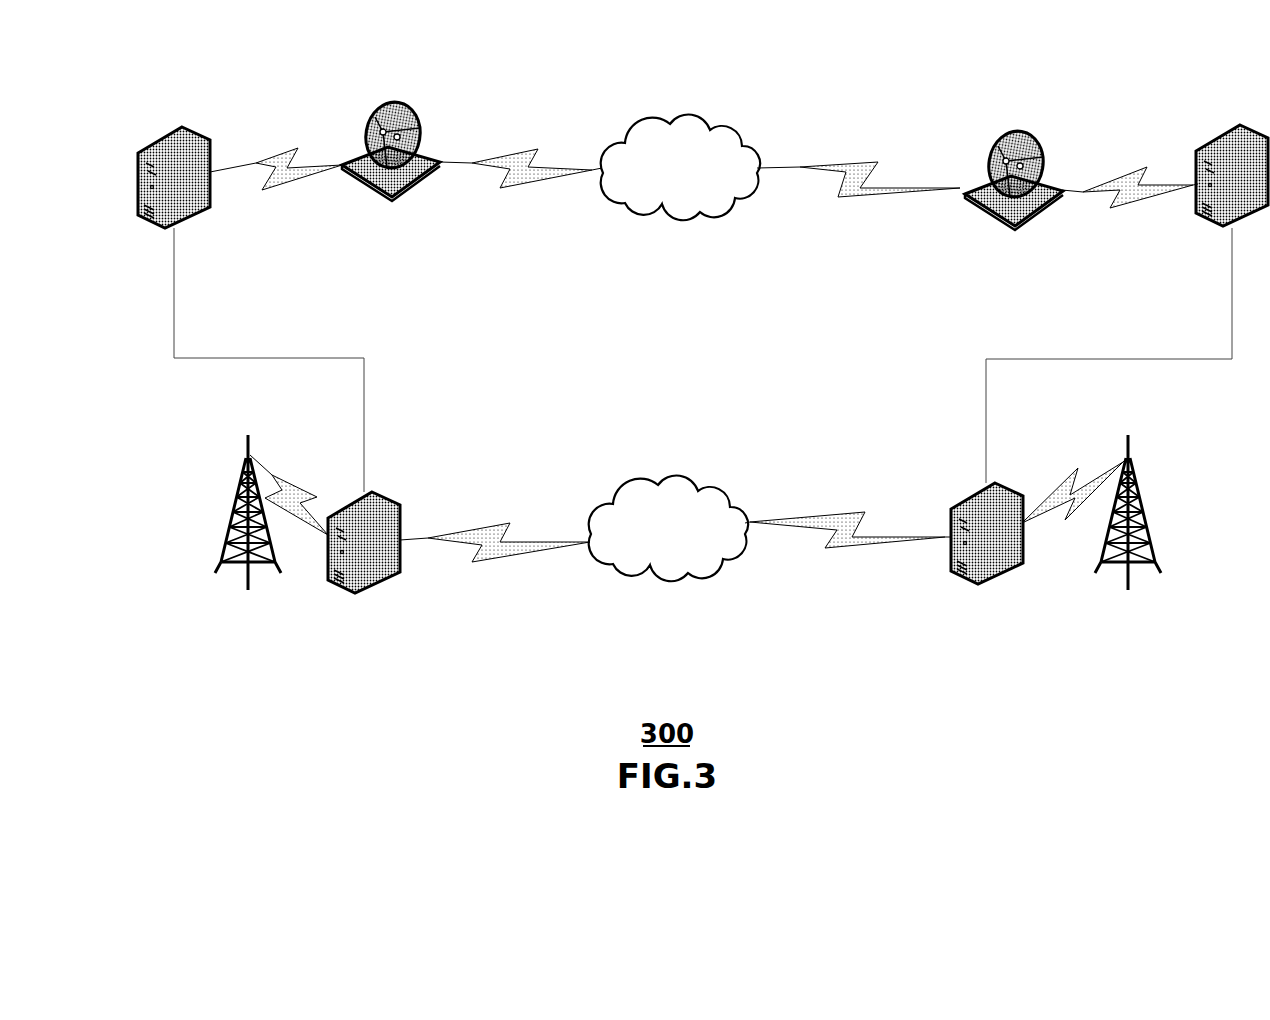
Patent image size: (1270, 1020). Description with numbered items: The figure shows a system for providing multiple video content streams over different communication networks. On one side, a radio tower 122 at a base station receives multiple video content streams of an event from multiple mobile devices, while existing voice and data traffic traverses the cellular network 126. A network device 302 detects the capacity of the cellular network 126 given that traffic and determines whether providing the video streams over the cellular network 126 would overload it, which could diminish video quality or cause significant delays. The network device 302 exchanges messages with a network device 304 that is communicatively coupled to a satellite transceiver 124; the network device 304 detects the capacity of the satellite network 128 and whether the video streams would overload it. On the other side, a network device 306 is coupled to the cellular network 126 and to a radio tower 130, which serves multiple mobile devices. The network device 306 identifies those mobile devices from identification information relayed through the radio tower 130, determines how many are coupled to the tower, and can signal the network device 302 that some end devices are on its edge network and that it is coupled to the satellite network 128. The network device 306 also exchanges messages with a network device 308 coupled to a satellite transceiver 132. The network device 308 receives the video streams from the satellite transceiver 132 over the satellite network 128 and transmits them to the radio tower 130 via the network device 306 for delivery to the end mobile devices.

The radio tower 122 is at (1090, 577).
The satellite transceiver 124 is at (1060, 190).
The cellular network 126 is at (668, 528).
The satellite network 128 is at (680, 167).
The radio tower 130 is at (285, 573).
The satellite transceiver 132 is at (342, 167).
The network device 302 is at (951, 574).
The network device 304 is at (1198, 150).
The network device 306 is at (397, 570).
The network device 308 is at (222, 142).